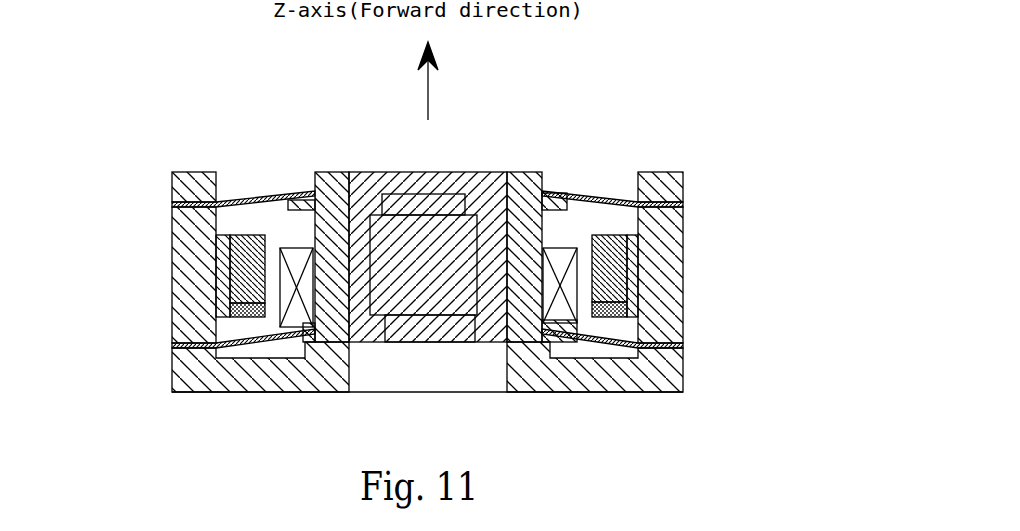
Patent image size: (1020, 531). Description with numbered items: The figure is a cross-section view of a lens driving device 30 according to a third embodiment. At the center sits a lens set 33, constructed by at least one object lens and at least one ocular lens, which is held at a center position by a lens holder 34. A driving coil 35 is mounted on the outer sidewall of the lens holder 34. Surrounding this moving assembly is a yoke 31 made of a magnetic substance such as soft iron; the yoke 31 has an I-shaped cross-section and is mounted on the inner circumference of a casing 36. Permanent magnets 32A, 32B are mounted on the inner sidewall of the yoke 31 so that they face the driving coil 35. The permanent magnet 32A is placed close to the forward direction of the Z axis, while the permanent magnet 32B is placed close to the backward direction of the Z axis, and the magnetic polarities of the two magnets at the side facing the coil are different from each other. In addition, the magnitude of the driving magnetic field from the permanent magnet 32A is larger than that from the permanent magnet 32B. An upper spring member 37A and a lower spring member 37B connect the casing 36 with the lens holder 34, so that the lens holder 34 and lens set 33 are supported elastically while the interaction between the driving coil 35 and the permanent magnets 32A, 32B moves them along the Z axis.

The lens driving device 30 is at (503, 153).
The yoke 31 is at (645, 258).
The permanent magnet 32A is at (628, 289).
The permanent magnet 32B is at (628, 325).
The lens set 33 is at (390, 178).
The lens holder 34 is at (525, 180).
The driving coil 35 is at (563, 245).
The casing 36 is at (193, 377).
The upper spring member 37A is at (232, 203).
The lower spring member 37B is at (233, 343).